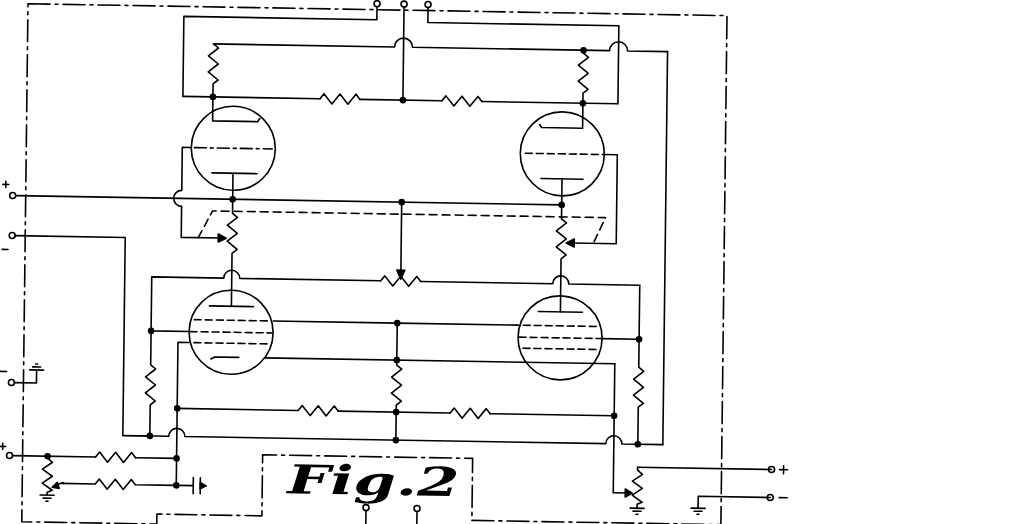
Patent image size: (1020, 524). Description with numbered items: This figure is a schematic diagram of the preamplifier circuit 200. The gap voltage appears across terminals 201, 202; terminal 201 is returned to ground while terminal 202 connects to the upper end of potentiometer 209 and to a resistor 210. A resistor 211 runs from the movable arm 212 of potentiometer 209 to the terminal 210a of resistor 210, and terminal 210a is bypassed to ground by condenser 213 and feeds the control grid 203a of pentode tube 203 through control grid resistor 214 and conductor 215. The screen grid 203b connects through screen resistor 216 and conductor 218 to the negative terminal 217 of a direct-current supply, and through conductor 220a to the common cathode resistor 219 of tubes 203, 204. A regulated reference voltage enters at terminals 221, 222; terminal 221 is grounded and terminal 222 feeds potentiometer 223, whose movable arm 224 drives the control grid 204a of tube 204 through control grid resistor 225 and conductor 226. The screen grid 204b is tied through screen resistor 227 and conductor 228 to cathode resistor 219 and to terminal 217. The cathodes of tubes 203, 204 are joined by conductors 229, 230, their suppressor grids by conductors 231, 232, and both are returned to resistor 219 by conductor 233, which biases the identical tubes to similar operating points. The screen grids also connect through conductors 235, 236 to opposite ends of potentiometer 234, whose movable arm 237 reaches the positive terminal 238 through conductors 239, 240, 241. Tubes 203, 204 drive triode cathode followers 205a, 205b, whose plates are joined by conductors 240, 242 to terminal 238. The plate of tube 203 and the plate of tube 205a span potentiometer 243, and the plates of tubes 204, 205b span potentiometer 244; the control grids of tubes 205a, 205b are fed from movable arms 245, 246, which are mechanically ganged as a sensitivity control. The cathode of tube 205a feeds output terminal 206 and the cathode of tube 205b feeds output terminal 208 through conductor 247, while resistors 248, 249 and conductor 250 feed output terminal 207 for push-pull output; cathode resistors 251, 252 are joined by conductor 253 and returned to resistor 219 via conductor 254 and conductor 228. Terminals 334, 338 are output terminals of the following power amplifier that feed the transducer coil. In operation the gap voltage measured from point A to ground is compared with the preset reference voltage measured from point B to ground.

The preamplifier circuit 200 is at (725, 73).
The terminal 201 is at (14, 388).
The terminal 202 is at (14, 458).
The vacuum tube 203 is at (266, 312).
The control grid 203a is at (233, 352).
The screen grid 203b is at (193, 333).
The vacuum tube 204 is at (524, 316).
The control grid 204a is at (538, 378).
The screen grid 204b is at (596, 328).
The amplifier tube 205a is at (276, 163).
The amplifier tube 205b is at (522, 160).
The output terminal 206 is at (371, 8).
The output terminal 207 is at (399, 9).
The output terminal 208 is at (428, 6).
The potentiometer 209 is at (58, 496).
The resistor 210 is at (112, 456).
The terminal 210a is at (181, 466).
The resistor 211 is at (110, 500).
The movable arm 212 is at (70, 463).
The by-pass condenser 213 is at (199, 487).
The control grid resistor 214 is at (320, 412).
The conductor 215 is at (180, 375).
The resistor 216 is at (145, 380).
The negative terminal 217 is at (15, 247).
The conductor 218 is at (125, 326).
The resistor 219 is at (400, 388).
The conductor 220a is at (236, 443).
The terminal 221 is at (772, 497).
The terminal 222 is at (773, 462).
The potentiometer 223 is at (645, 490).
The movable arm 224 is at (618, 494).
The control grid resistor 225 is at (488, 416).
The conductor 226 is at (615, 376).
The resistor 227 is at (647, 390).
The conductor 228 is at (586, 446).
The conductor 229 is at (323, 365).
The conductor 230 is at (480, 378).
The conductor 231 is at (303, 326).
The conductor 232 is at (420, 326).
The conductor 233 is at (396, 350).
The potentiometer 234 is at (403, 287).
The conductor 235 is at (339, 283).
The conductor 236 is at (536, 283).
The movable arm 237 is at (406, 278).
The positive terminal 238 is at (16, 203).
The conductor 239 is at (403, 243).
The conductor 240 is at (332, 212).
The conductor 241 is at (165, 203).
The conductor 242 is at (502, 206).
The potentiometer 243 is at (240, 256).
The potentiometer 244 is at (556, 258).
The movable arm 245 is at (216, 246).
The movable arm 246 is at (577, 250).
The conductor 247 is at (620, 103).
The resistor 248 is at (328, 105).
The resistor 249 is at (462, 105).
The conductor 250 is at (402, 74).
The resistor 251 is at (217, 70).
The resistor 252 is at (576, 70).
The conductor 253 is at (244, 49).
The conductor 254 is at (666, 216).
The output terminal 334 is at (366, 511).
The output terminal 338 is at (423, 511).
The point A is at (181, 414).
The point B is at (613, 416).